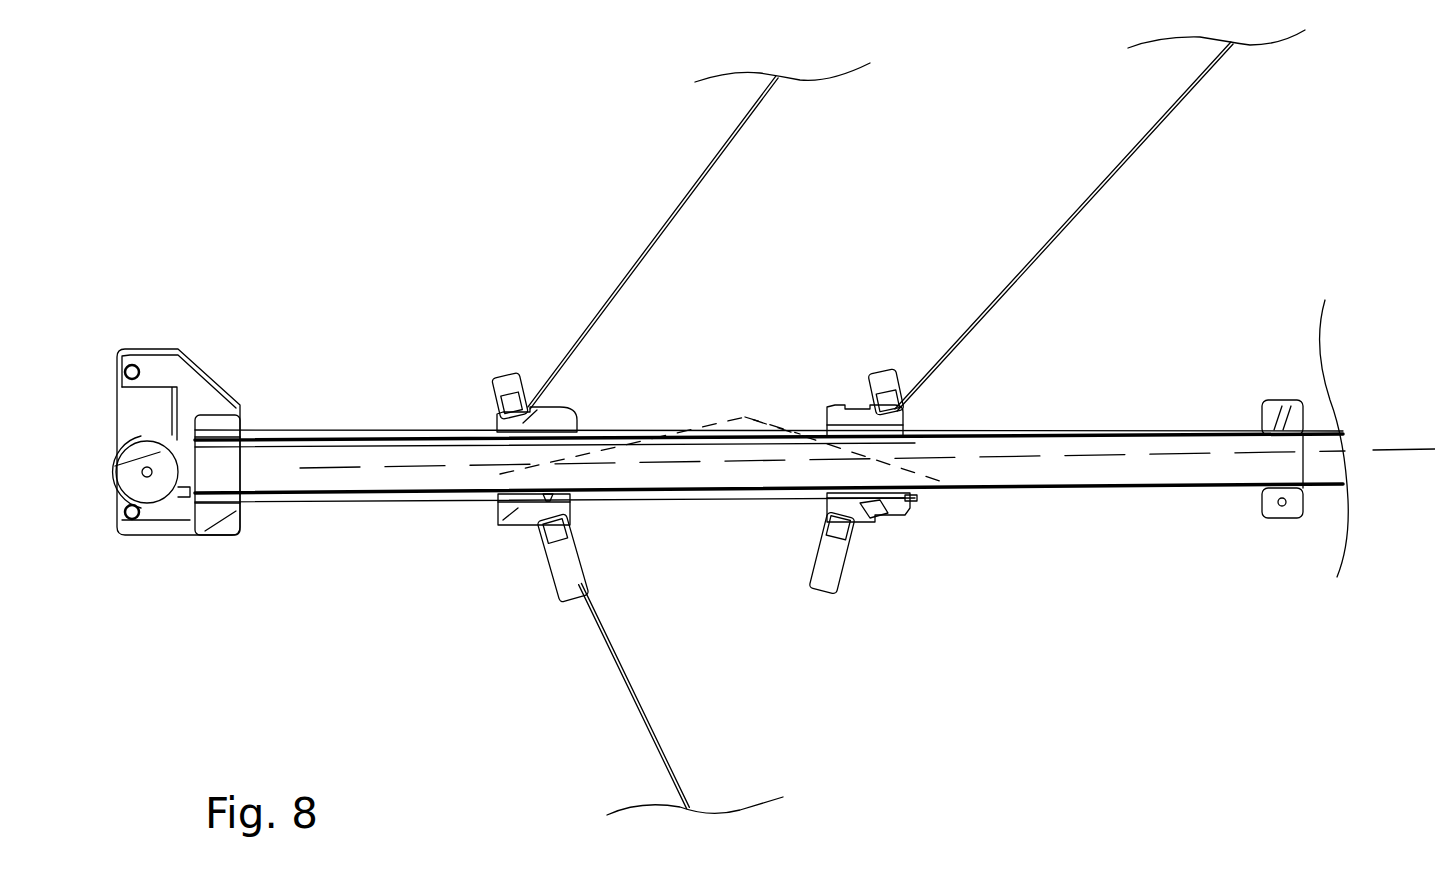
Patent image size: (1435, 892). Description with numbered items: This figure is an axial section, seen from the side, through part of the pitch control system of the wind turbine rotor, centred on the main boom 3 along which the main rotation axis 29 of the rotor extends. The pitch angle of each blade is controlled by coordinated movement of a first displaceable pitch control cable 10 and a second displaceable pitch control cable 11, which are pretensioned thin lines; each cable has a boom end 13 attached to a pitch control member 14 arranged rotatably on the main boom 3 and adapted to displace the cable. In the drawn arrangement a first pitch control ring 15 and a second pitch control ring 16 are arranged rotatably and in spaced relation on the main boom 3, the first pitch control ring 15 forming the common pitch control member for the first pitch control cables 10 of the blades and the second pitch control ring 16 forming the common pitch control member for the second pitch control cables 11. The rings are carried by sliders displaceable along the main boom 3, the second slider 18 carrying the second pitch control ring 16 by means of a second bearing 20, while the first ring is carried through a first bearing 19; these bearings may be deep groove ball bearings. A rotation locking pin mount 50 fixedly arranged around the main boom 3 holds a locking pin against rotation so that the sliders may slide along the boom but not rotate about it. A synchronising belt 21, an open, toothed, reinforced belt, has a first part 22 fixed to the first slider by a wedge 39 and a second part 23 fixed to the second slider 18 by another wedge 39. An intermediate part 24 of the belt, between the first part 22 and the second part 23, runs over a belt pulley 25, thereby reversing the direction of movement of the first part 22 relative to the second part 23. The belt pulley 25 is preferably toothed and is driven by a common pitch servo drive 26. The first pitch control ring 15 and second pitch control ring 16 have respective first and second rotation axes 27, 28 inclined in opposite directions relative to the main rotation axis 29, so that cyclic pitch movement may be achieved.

The main boom 3 is at (1220, 468).
The first displaceable pitch control cable 10 is at (706, 180).
The second displaceable pitch control cable 11 is at (1128, 176).
The boom end 13 is at (540, 388).
The pitch control member 14 is at (498, 530).
The first pitch control ring 15 is at (560, 578).
The second pitch control ring 16 is at (838, 550).
The second slider 18 is at (862, 512).
The first bearing 19 is at (575, 522).
The second bearing 20 is at (826, 517).
The synchronising belt 21 is at (347, 503).
The first part 22 is at (588, 432).
The second part 23 is at (940, 496).
The intermediate part 24 is at (158, 430).
The belt pulley 25 is at (150, 487).
The common pitch servo drive 26 is at (204, 356).
The first rotation axis 27 is at (407, 503).
The second rotation axis 28 is at (746, 418).
The main rotation axis 29 is at (1160, 447).
The wedge 39 is at (578, 425).
The rotation locking pin mount 50 is at (1274, 420).